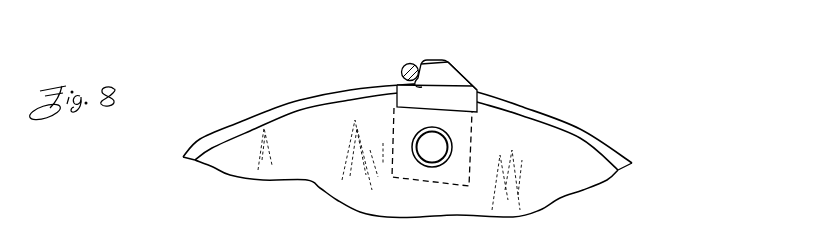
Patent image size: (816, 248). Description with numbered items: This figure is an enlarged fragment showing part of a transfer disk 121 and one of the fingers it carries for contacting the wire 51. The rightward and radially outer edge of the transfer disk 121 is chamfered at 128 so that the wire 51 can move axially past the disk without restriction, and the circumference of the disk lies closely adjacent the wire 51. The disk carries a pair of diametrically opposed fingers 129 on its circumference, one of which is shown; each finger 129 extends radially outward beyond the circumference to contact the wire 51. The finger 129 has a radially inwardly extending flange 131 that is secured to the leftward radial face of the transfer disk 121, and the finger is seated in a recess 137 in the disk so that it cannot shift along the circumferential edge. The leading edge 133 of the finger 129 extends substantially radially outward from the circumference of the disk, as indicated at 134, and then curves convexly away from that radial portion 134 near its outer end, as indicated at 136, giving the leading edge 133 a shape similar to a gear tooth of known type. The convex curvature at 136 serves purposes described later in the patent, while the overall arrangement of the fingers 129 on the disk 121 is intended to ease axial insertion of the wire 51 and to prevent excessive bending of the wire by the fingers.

The wire 51 is at (401, 68).
The transfer disk 121 is at (553, 138).
The chamfer 128 is at (617, 157).
The finger 129 is at (435, 70).
The flange 131 is at (475, 135).
The leading edge 133 is at (453, 78).
The radially extending portion 134 is at (477, 95).
The convexly curved portion 136 is at (413, 64).
The recess 137 is at (397, 100).